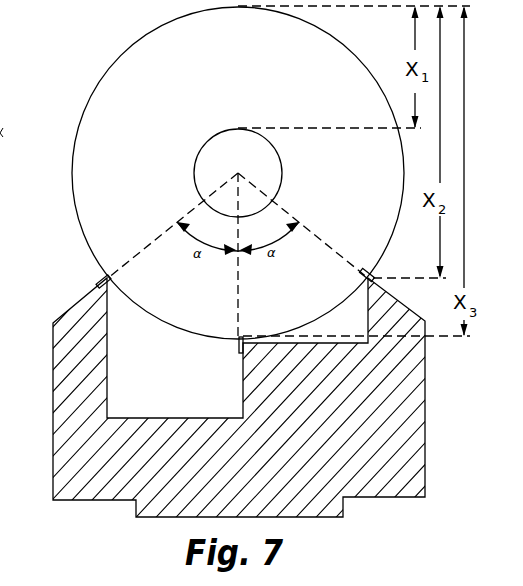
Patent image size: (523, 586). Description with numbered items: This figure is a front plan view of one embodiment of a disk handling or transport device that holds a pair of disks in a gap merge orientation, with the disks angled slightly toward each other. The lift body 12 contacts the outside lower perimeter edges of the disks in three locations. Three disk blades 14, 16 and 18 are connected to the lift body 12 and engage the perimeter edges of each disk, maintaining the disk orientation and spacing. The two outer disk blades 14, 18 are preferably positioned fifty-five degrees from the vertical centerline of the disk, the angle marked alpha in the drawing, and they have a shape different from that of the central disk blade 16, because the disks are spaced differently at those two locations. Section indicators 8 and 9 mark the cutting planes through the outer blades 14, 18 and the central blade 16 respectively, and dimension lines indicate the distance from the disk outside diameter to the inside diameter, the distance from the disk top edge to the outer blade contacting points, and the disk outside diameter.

The section line 8- 8 is at (65, 284).
The section line 9- 9 is at (266, 322).
The lift body 12 is at (427, 428).
The outer disk blade 14 is at (110, 278).
The central disk blade 16 is at (243, 335).
The outer disk blade 18 is at (366, 268).